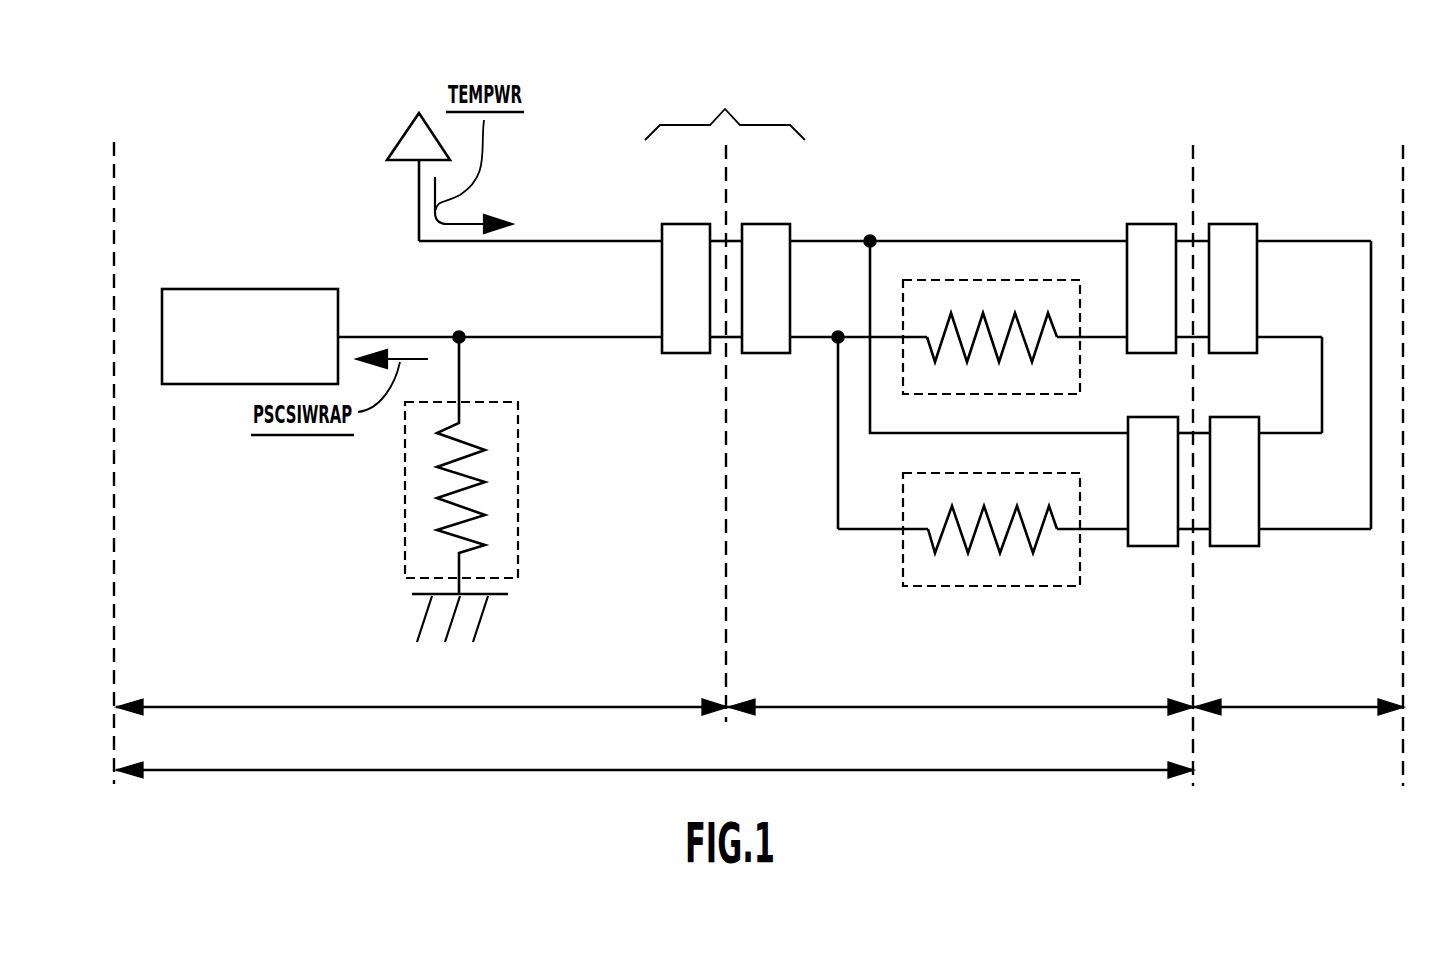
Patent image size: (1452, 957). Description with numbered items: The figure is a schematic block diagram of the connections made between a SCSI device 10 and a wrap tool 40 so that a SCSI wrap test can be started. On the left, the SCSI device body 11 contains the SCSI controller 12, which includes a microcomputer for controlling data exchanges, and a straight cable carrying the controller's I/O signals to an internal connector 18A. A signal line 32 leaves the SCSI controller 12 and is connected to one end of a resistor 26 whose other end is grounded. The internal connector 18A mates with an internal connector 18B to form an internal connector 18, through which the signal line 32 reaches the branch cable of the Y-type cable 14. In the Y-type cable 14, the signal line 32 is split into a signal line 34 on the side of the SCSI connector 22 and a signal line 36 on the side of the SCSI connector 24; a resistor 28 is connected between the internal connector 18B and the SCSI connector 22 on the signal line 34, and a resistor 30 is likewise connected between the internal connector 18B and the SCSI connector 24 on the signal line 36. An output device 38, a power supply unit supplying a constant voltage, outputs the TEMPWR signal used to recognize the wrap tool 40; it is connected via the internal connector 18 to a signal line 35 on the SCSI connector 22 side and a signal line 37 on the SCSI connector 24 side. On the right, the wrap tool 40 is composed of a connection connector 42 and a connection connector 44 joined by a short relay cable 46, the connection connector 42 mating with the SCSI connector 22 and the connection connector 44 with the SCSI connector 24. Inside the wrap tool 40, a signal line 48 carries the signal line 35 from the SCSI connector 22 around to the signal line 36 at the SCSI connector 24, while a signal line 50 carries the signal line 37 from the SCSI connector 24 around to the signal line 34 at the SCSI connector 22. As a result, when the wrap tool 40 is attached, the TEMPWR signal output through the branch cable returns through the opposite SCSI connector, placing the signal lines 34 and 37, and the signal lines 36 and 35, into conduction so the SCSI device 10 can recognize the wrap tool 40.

The SCSI device 10 is at (478, 770).
The SCSI device body 11 is at (320, 707).
The SCSI controller 12 is at (252, 289).
The Y-type cable 14 is at (872, 707).
The internal connector 18 is at (725, 109).
The internal connector 18A is at (685, 224).
The internal connector 18B is at (771, 224).
The SCSI connector 22 is at (1148, 224).
The SCSI connector 24 is at (1158, 547).
The resistor 26 is at (405, 476).
The resistor 28 is at (1082, 365).
The resistor 30 is at (983, 587).
The signal line 32 is at (410, 337).
The signal line 34 is at (1097, 337).
The signal line 35 is at (847, 240).
The signal line 36 is at (1105, 533).
The signal line 37 is at (870, 408).
The output device 38 is at (405, 127).
The wrap tool 40 is at (1322, 707).
The connection connector 42 is at (1228, 224).
The connection connector 44 is at (1243, 547).
The relay cable 46 is at (1327, 192).
The signal line 48 is at (1371, 350).
The signal line 50 is at (1322, 398).